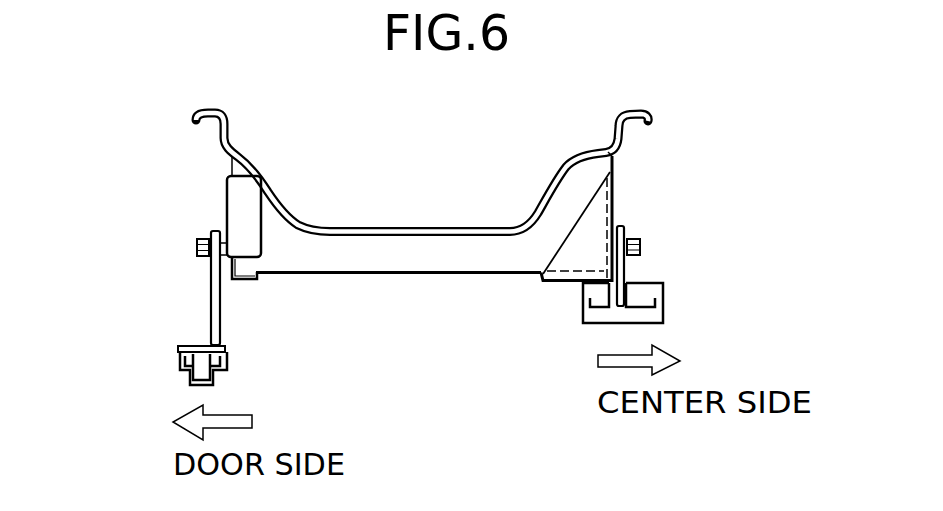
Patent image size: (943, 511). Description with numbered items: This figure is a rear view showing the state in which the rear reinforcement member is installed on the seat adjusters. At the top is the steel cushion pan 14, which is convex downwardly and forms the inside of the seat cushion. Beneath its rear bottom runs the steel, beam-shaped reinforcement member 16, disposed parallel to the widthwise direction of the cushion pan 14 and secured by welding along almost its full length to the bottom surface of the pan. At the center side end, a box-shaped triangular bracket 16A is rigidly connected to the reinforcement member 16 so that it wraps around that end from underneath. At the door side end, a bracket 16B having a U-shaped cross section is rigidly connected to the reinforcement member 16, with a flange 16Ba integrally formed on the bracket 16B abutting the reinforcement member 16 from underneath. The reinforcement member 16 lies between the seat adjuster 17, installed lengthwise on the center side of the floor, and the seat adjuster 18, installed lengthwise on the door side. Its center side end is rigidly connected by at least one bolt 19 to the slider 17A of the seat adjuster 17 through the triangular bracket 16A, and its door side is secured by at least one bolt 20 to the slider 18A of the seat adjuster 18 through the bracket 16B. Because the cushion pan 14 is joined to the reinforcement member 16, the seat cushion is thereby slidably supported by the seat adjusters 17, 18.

The cushion pan 14 is at (418, 228).
The reinforcement member 16 is at (422, 260).
The triangular bracket 16A is at (614, 184).
The bracket 16B is at (228, 203).
The flange 16Ba is at (251, 281).
The seat adjuster 17 is at (668, 308).
The slider 17A is at (626, 264).
The seat adjuster 18 is at (165, 353).
The slider 18A is at (210, 312).
The bolt 19 is at (641, 243).
The bolt 20 is at (196, 247).